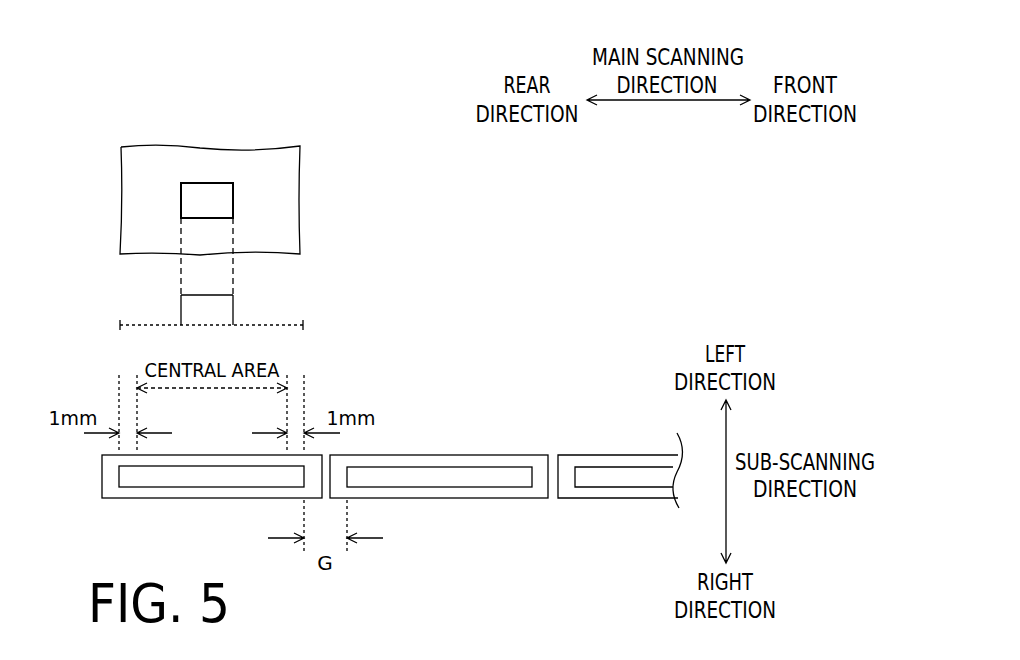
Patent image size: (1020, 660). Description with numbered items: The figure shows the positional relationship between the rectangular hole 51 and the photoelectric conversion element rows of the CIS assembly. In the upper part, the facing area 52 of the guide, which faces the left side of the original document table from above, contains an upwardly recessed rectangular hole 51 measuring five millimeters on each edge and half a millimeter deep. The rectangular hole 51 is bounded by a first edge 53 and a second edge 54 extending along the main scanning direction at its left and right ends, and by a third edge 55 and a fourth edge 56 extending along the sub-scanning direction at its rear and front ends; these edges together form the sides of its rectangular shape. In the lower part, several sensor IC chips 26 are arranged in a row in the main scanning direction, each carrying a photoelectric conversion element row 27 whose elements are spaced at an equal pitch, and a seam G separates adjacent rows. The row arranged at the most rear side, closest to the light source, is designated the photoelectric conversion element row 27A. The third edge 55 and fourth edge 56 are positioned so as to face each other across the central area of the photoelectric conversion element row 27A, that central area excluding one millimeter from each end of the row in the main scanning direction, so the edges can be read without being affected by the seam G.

The sensor IC chip 26 is at (162, 491).
The photoelectric conversion element row 27 is at (505, 477).
The photoelectric conversion element row closest to the light source 27A is at (213, 476).
The rectangular hole 51 is at (220, 197).
The facing area 52 is at (265, 155).
The first edge 53 is at (208, 218).
The second edge 54 is at (206, 183).
The third edge 55 is at (181, 200).
The fourth edge 56 is at (233, 200).